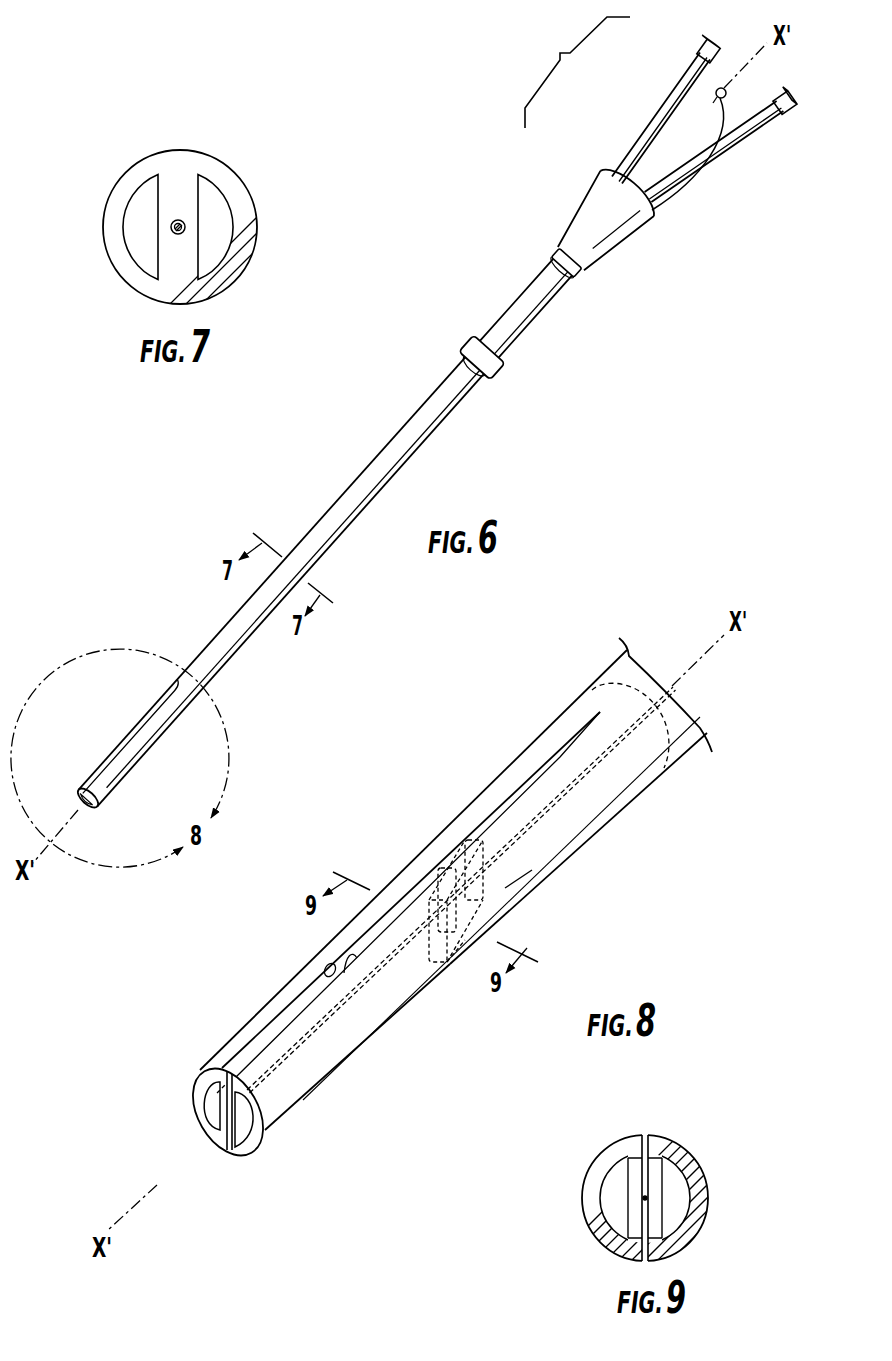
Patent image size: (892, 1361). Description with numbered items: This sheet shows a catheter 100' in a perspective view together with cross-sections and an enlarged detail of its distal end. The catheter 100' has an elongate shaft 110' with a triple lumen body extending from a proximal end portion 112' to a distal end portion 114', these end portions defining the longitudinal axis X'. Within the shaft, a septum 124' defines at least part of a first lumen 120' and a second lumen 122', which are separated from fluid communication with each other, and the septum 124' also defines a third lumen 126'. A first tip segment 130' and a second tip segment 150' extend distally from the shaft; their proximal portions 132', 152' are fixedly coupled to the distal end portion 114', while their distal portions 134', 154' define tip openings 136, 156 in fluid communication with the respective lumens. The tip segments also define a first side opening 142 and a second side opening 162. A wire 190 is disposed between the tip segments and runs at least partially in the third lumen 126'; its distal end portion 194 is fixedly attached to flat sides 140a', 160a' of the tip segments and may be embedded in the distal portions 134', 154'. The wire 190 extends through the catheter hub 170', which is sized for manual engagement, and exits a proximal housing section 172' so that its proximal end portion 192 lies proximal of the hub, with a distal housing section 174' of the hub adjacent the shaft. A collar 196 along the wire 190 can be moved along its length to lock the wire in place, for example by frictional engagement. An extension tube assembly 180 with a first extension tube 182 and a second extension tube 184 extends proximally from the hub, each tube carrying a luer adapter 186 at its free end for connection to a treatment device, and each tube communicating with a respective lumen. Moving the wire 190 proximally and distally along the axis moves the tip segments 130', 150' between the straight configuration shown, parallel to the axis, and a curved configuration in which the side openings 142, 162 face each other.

In FIG. 6, the catheter 100' is at (446, 416).
In FIG. 6, the elongate shaft 110' is at (299, 575).
In FIG. 7, the elongate shaft 110' is at (166, 197).
In FIG. 8, the elongate shaft 110' is at (434, 843).
In FIG. 6, the proximal end portion 112' is at (541, 318).
In FIG. 6, the distal end portion 114' is at (293, 578).
In FIG. 8, the distal end portion 114' is at (679, 729).
In FIG. 7, the first lumen 120' is at (100, 226).
In FIG. 8, the first lumen 120' is at (155, 1086).
In FIG. 9, the first lumen 120' is at (610, 1188).
In FIG. 7, the second lumen 122' is at (258, 226).
In FIG. 8, the second lumen 122' is at (301, 1124).
In FIG. 9, the second lumen 122' is at (682, 1171).
In FIG. 7, the septum 124' is at (356, 204).
In FIG. 7, the third lumen 126' is at (219, 162).
In FIG. 6, the first tip segment 130' is at (130, 693).
In FIG. 8, the first tip segment 130' is at (418, 894).
In FIG. 9, the first tip segment 130' is at (677, 1195).
In FIG. 8, the proximal portion 132' is at (411, 868).
In FIG. 8, the distal portion 134' is at (183, 1068).
In FIG. 8, the tip opening 136 is at (207, 1130).
In FIG. 8, the flat side 140a' is at (287, 952).
In FIG. 8, the first side opening 142 is at (438, 860).
In FIG. 9, the first side opening 142 is at (630, 1203).
In FIG. 6, the second tip segment 150' is at (290, 590).
In FIG. 8, the second tip segment 150' is at (578, 848).
In FIG. 9, the second tip segment 150' is at (710, 1195).
In FIG. 8, the proximal portion 152' is at (505, 908).
In FIG. 8, the distal portion 154' is at (357, 1047).
In FIG. 8, the tip opening 156 is at (252, 1147).
In FIG. 8, the flat side 160a' is at (391, 1021).
In FIG. 8, the second side opening 162 is at (456, 963).
In FIG. 9, the second side opening 162 is at (657, 1217).
In FIG. 6, the catheter hub 170' is at (588, 213).
In FIG. 6, the proximal housing section 172' is at (665, 211).
In FIG. 6, the distal housing section 174' is at (592, 292).
In FIG. 6, the extension tube assembly 180 is at (577, 72).
In FIG. 6, the first extension tube 182 is at (650, 137).
In FIG. 6, the second extension tube 184 is at (717, 153).
In FIG. 6, the luer adapter 186 is at (703, 46).
In FIG. 6, the wire 190 is at (700, 118).
In FIG. 7, the wire 190 is at (185, 229).
In FIG. 8, the wire 190 is at (263, 1040).
In FIG. 9, the wire 190 is at (643, 1201).
In FIG. 6, the proximal end portion 192 is at (718, 150).
In FIG. 8, the distal end portion 194 is at (217, 1093).
In FIG. 6, the collar 196 is at (725, 92).